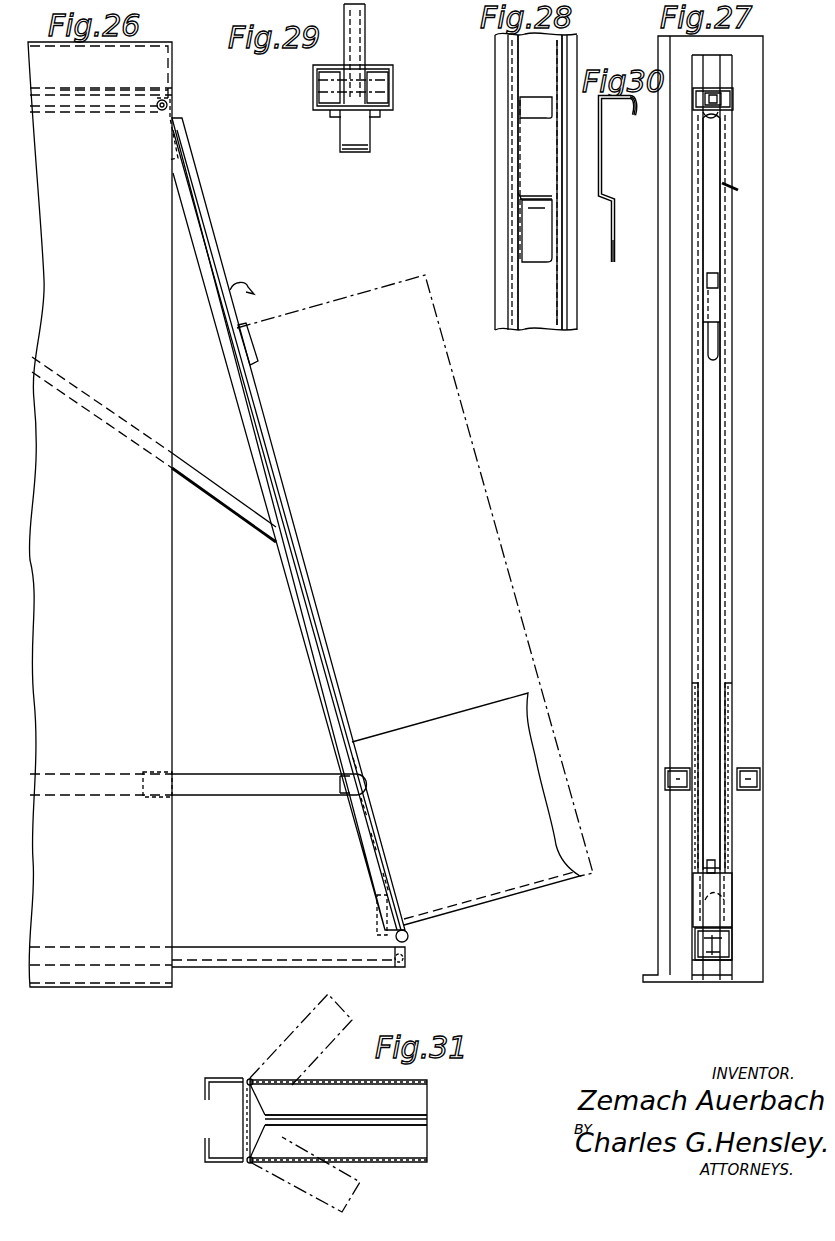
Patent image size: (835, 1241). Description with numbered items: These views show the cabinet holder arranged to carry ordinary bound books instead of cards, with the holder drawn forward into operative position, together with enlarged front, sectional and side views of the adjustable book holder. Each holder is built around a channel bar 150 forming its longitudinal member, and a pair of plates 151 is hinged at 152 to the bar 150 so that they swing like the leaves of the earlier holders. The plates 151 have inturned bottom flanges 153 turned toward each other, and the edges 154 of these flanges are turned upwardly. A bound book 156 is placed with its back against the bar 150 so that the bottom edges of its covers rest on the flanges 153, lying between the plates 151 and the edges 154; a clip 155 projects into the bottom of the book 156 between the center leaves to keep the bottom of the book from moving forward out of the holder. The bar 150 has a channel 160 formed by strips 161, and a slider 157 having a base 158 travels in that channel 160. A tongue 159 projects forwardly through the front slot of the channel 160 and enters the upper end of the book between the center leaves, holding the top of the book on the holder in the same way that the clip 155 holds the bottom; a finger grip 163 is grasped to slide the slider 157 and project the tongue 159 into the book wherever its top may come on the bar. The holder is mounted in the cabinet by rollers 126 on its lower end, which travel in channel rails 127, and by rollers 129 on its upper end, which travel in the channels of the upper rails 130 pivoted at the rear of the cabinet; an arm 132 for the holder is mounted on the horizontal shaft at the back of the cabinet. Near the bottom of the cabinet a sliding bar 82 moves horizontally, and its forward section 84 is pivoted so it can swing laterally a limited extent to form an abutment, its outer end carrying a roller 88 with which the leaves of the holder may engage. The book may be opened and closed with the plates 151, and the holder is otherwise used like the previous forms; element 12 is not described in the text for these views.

In FIG. 26, the sill 12 is at (402, 973).
In FIG. 26, the sliding bar 82 is at (120, 795).
In FIG. 26, the forward section of the bar 84 is at (268, 778).
In FIG. 27, the forward section of the bar 84 is at (748, 768).
In FIG. 27, the roller 88 is at (778, 778).
In FIG. 27, the rollers 126 is at (735, 948).
In FIG. 26, the channel rails 127 is at (290, 950).
In FIG. 27, the channel rails 127 is at (713, 962).
In FIG. 26, the rollers 129 is at (158, 110).
In FIG. 29, the rollers 129 is at (381, 78).
In FIG. 27, the rollers 129 is at (730, 95).
In FIG. 26, the upper rails 130 is at (79, 113).
In FIG. 29, the upper rails 130 is at (395, 100).
In FIG. 27, the upper rails 130 is at (718, 82).
In FIG. 26, the arm 132 is at (242, 523).
In FIG. 26, the channel bar 150 is at (313, 660).
In FIG. 28, the channel bar 150 is at (495, 294).
In FIG. 27, the channel bar 150 is at (658, 432).
In FIG. 31, the channel bar 150 is at (222, 1078).
In FIG. 26, the plates 151 is at (415, 600).
In FIG. 27, the plates 151 is at (733, 900).
In FIG. 31, the plates 151 is at (395, 1160).
In FIG. 31, the hinge 152 is at (249, 1163).
In FIG. 31, the inturned bottom flanges 153 is at (422, 1148).
In FIG. 27, the edges 154 is at (705, 860).
In FIG. 31, the edges 154 is at (430, 1120).
In FIG. 26, the clip 155 is at (412, 937).
In FIG. 31, the book 156 is at (424, 1100).
In FIG. 29, the slider 157 is at (353, 108).
In FIG. 28, the slider 157 is at (529, 163).
In FIG. 30, the slider 157 is at (600, 168).
In FIG. 27, the slider 157 is at (715, 310).
In FIG. 28, the base 158 is at (514, 188).
In FIG. 26, the tongue 159 is at (262, 357).
In FIG. 28, the tongue 159 is at (526, 240).
In FIG. 30, the tongue 159 is at (613, 262).
In FIG. 27, the tongue 159 is at (718, 350).
In FIG. 28, the channel 160 is at (543, 323).
In FIG. 27, the channel 160 is at (715, 213).
In FIG. 31, the channel 160 is at (245, 1104).
In FIG. 26, the strips 161 is at (228, 260).
In FIG. 29, the strips 161 is at (376, 118).
In FIG. 28, the strips 161 is at (565, 316).
In FIG. 27, the strips 161 is at (690, 508).
In FIG. 31, the strips 161 is at (258, 1095).
In FIG. 26, the finger grip 163 is at (256, 289).
In FIG. 29, the finger grip 163 is at (370, 151).
In FIG. 28, the finger grip 163 is at (532, 114).
In FIG. 30, the finger grip 163 is at (633, 116).
In FIG. 27, the finger grip 163 is at (720, 278).